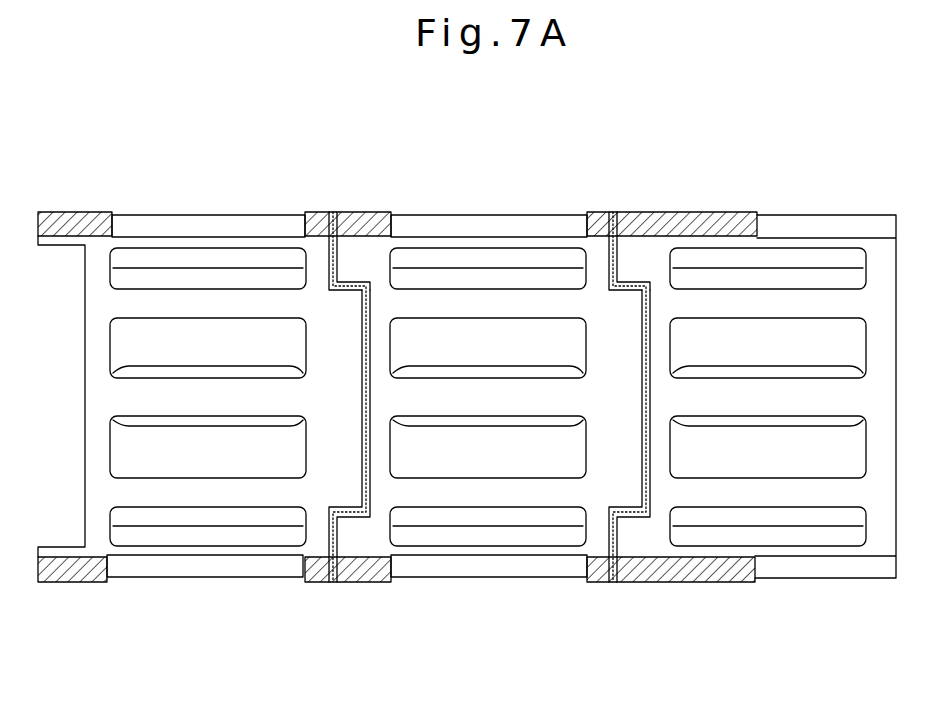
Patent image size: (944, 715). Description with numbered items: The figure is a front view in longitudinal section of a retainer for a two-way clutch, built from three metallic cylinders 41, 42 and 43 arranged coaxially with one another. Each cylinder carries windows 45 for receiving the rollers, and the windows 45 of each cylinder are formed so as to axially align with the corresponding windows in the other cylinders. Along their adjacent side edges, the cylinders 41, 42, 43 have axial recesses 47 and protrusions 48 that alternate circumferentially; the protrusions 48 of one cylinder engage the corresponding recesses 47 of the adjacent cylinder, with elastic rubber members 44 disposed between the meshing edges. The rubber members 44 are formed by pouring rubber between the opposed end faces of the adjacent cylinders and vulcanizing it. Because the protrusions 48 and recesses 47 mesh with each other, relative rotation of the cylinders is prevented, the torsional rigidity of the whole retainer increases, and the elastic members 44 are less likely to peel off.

The metallic cylinder 41 is at (740, 214).
The metallic cylinder 42 is at (494, 214).
The metallic cylinder 43 is at (178, 214).
The elastic rubber member 44 is at (328, 583).
The window 45 is at (168, 573).
The axial recess 47 is at (372, 307).
The protrusion 48 is at (348, 303).